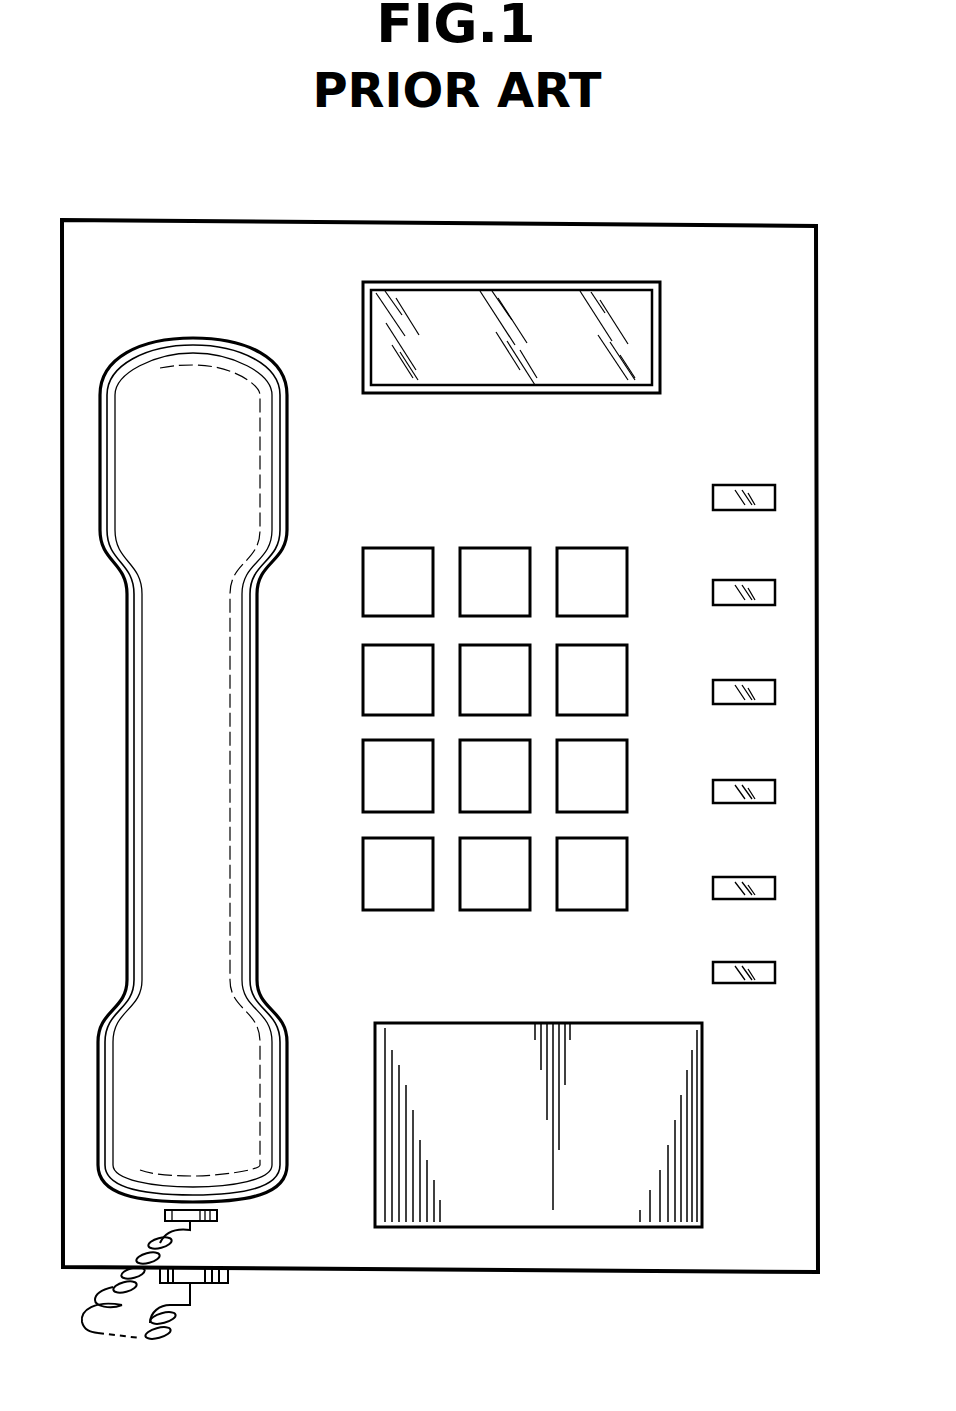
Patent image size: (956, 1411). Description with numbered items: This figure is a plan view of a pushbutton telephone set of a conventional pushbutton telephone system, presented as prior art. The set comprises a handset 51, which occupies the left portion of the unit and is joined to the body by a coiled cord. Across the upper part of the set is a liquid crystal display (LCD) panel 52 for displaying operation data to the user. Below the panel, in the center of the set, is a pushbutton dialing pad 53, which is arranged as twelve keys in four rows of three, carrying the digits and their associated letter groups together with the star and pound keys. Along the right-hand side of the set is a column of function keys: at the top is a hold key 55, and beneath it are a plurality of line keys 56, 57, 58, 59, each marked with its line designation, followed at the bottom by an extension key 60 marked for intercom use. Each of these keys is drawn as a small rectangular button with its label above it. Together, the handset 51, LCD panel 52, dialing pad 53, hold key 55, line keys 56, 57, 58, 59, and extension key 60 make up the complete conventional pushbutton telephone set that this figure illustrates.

The handset 51 is at (275, 430).
The liquid crystal display (LCD) panel 52 is at (628, 283).
The pushbutton dialing pad 53 is at (630, 540).
The hold key 55 is at (775, 497).
The line key 56 is at (775, 592).
The line key 57 is at (775, 692).
The line key 58 is at (775, 791).
The line key 59 is at (775, 888).
The extension key 60 is at (775, 973).